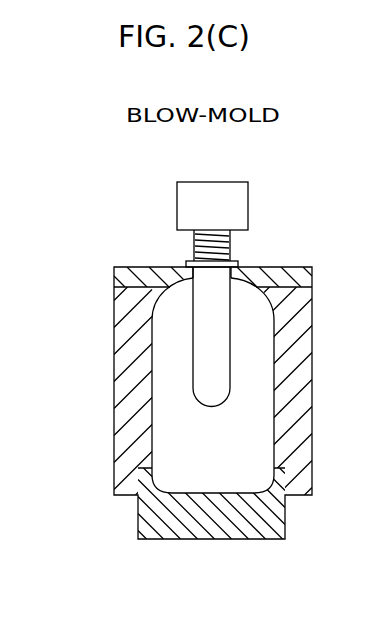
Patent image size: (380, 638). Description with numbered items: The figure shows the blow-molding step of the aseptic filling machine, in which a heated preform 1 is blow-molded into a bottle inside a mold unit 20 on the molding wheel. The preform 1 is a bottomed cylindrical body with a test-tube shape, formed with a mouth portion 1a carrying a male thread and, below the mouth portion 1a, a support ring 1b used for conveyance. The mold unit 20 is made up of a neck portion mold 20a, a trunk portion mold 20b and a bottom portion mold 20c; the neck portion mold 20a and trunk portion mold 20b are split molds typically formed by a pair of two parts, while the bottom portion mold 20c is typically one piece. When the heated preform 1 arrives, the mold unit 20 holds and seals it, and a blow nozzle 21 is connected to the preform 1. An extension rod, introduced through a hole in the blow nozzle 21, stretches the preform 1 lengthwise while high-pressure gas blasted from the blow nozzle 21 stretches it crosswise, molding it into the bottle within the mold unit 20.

The preform 1 is at (269, 300).
The mouth portion 1a is at (240, 250).
The support ring 1b is at (235, 261).
The mold unit 20 is at (206, 426).
The neck portion mold 20a is at (114, 272).
The trunk portion mold 20b is at (312, 383).
The bottom portion mold 20c is at (243, 540).
The blow nozzle 21 is at (237, 200).